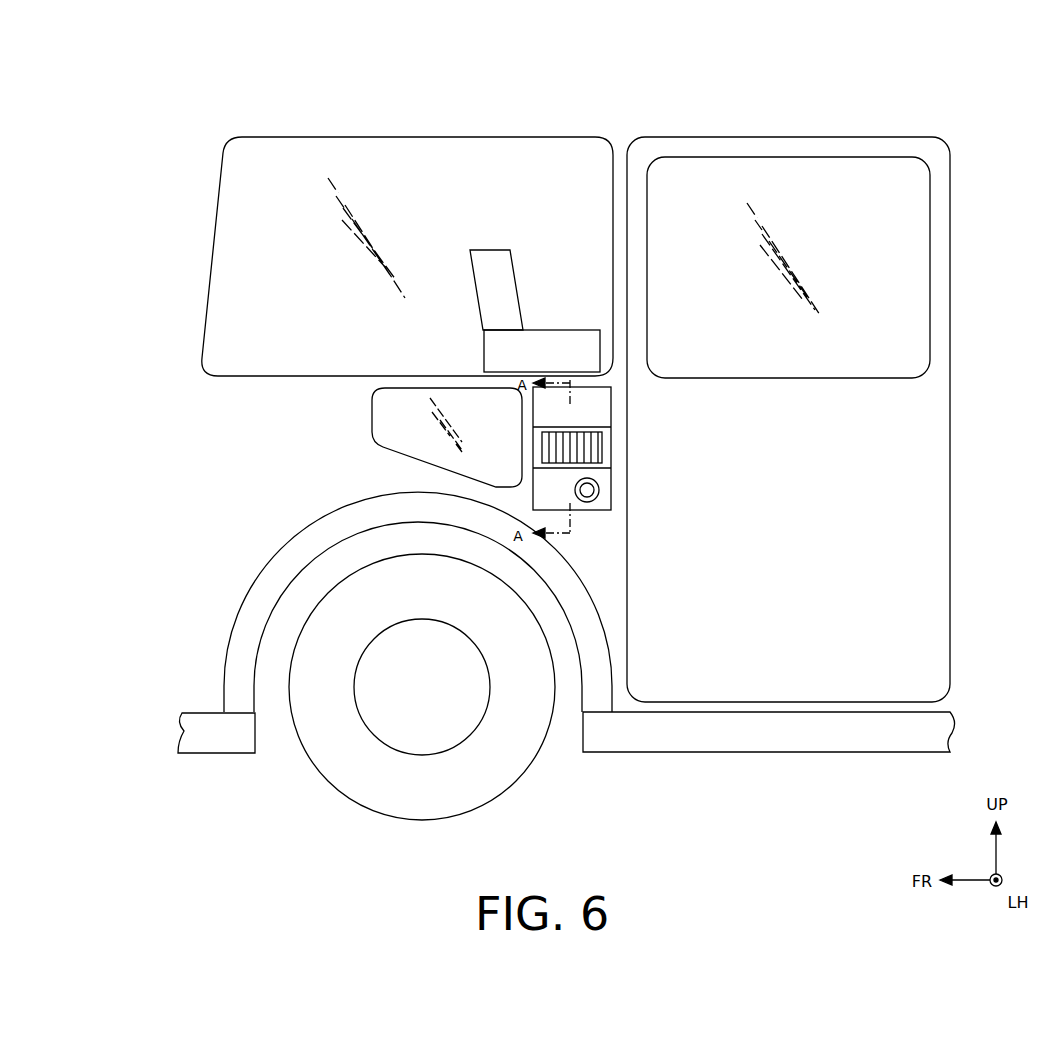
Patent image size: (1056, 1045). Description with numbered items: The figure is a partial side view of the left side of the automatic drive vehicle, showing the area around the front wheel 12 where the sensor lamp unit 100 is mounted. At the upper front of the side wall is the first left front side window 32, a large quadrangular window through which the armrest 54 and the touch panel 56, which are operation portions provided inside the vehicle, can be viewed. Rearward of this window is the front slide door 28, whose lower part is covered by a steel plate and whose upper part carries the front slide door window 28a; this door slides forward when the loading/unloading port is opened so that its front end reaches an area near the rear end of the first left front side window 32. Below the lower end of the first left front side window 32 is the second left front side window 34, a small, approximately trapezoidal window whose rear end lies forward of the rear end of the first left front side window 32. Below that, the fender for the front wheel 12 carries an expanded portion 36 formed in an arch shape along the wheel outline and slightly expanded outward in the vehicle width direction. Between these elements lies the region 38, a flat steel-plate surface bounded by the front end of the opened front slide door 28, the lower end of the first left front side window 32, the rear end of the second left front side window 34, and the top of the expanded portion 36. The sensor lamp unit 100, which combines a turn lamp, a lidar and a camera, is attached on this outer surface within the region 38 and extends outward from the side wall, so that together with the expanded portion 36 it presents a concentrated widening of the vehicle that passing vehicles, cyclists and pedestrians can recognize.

The front wheel 12 is at (317, 773).
The front slide door 28 is at (862, 135).
The front slide door window 28a is at (762, 154).
The first left front side window 32 is at (437, 150).
The second left front side window 34 is at (378, 418).
The expanded portion 36 is at (250, 647).
The region 38 is at (598, 523).
The armrest 54 is at (560, 330).
The touch panel 56 is at (514, 257).
The sensor lamp unit 100 is at (611, 417).